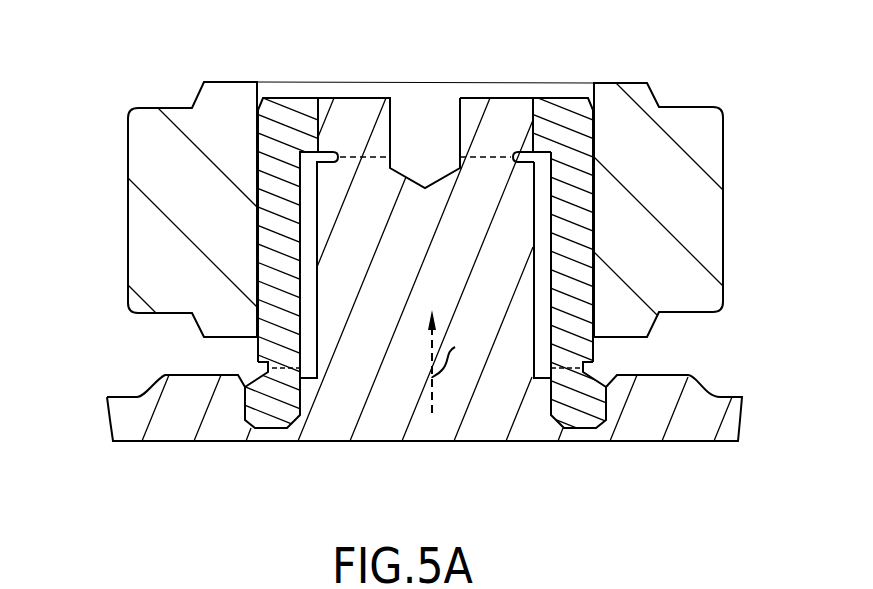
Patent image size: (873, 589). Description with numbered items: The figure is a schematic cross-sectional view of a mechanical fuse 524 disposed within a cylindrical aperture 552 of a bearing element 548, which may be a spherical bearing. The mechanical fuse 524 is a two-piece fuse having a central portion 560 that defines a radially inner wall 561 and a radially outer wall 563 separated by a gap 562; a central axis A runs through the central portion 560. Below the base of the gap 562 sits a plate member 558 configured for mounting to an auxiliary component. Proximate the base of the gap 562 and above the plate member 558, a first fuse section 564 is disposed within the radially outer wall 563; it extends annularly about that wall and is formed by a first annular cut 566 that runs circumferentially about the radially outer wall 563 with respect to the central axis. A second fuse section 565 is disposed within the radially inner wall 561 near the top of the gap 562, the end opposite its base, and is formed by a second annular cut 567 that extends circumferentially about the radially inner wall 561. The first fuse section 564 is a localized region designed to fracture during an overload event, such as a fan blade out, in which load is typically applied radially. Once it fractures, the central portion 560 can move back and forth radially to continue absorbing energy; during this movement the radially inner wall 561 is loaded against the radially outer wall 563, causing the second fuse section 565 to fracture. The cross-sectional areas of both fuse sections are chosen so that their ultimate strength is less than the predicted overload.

The mechanical fuse 524 is at (98, 85).
The bearing element 548 is at (713, 222).
The cylindrical aperture 552 is at (595, 155).
The plate member 558 is at (738, 420).
The central portion 560 is at (390, 193).
The radially inner wall 561 is at (518, 112).
The gap 562 is at (548, 157).
The radially outer wall 563 is at (544, 180).
The first fuse section 564 is at (283, 368).
The second fuse section 565 is at (365, 157).
The first annular cut 566 is at (245, 368).
The second annular cut 567 is at (323, 135).